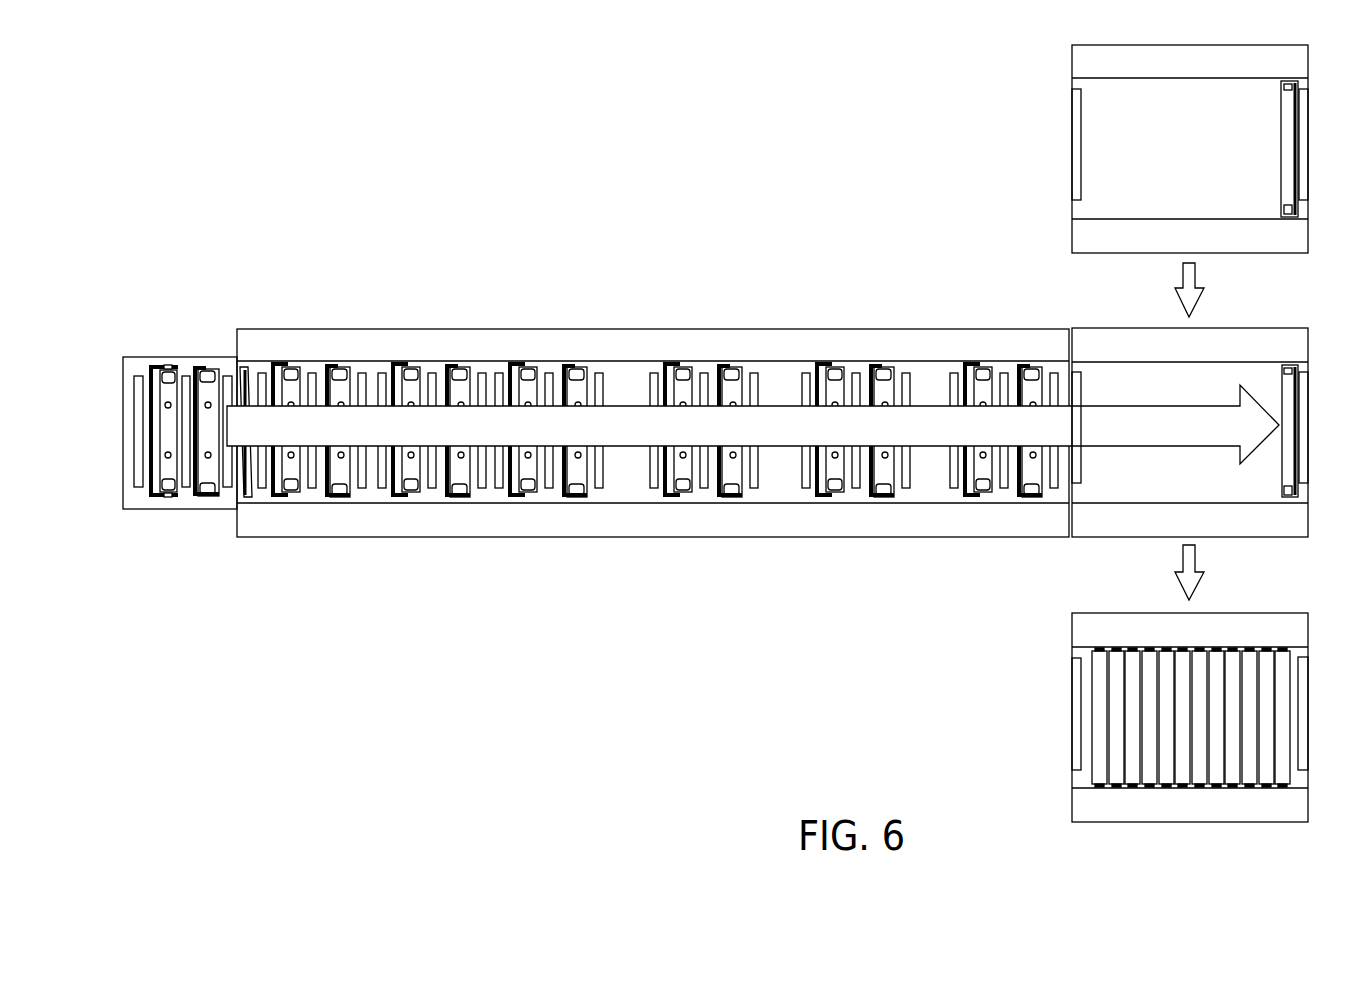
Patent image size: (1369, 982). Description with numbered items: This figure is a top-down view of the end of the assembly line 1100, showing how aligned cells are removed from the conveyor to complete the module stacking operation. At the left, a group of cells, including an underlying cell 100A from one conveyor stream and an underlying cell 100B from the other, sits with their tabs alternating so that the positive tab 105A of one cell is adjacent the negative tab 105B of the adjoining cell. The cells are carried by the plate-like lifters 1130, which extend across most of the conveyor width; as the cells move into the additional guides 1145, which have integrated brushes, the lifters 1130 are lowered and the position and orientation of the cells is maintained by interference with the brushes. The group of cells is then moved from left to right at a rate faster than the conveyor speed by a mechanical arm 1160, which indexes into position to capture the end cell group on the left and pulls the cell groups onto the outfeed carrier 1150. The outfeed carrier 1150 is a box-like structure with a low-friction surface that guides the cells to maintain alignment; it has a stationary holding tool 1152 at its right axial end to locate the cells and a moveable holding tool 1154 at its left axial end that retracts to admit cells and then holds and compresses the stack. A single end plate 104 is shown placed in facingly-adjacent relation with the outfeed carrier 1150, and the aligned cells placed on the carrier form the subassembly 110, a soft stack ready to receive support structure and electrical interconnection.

The assembly line 1100 is at (150, 346).
The underlying cell 100A is at (212, 438).
The underlying cell 100B is at (167, 462).
The positive tab 105A is at (171, 498).
The negative tab 105B is at (178, 366).
The lifters 1130 is at (383, 378).
The guides 1145 is at (782, 368).
The mechanical arm 1160 is at (628, 436).
The outfeed carrier 1150 is at (1077, 127).
The stationary holding tool 1152 is at (1302, 92).
The moveable holding tool 1154 is at (1056, 75).
The end plate 104 is at (1280, 154).
The subassembly 110 is at (1283, 688).